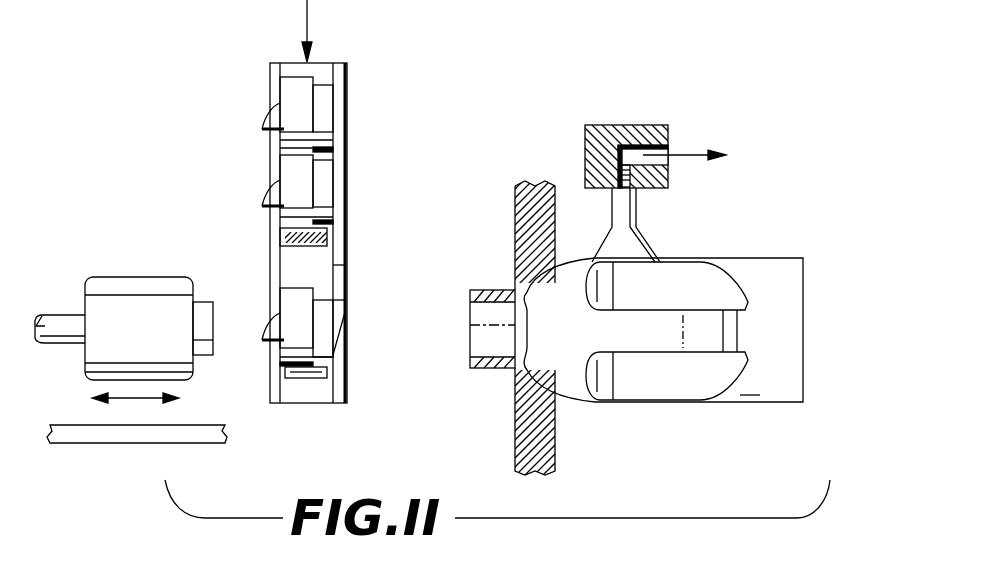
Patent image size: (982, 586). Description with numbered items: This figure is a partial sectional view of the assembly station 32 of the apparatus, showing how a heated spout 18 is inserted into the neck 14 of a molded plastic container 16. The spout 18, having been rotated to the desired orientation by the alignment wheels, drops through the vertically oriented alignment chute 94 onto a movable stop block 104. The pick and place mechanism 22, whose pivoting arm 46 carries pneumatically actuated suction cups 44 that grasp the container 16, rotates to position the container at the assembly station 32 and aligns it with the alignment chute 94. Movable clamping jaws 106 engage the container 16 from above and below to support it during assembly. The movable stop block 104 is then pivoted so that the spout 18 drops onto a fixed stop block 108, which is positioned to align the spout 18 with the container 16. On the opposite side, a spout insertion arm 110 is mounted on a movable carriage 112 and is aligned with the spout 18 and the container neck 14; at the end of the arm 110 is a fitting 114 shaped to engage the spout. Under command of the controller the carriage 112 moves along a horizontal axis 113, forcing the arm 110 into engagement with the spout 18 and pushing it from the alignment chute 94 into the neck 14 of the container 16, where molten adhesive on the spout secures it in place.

The neck 14 is at (490, 370).
The molded plastic container 16 is at (793, 318).
The spout 18 is at (300, 110).
The pick and place mechanism 22 is at (636, 127).
The assembly station 32 is at (441, 247).
The suction cups 44 is at (655, 245).
The pivoting arm 46 is at (665, 130).
The alignment chute 94 is at (347, 118).
The movable stop block 104 is at (295, 246).
The movable clamping jaws 106 is at (518, 210).
The fixed stop block 108 is at (310, 372).
The spout insertion arm 110 is at (70, 320).
The movable carriage 112 is at (60, 443).
The horizontal axis 113 is at (125, 398).
The fitting 114 is at (138, 283).